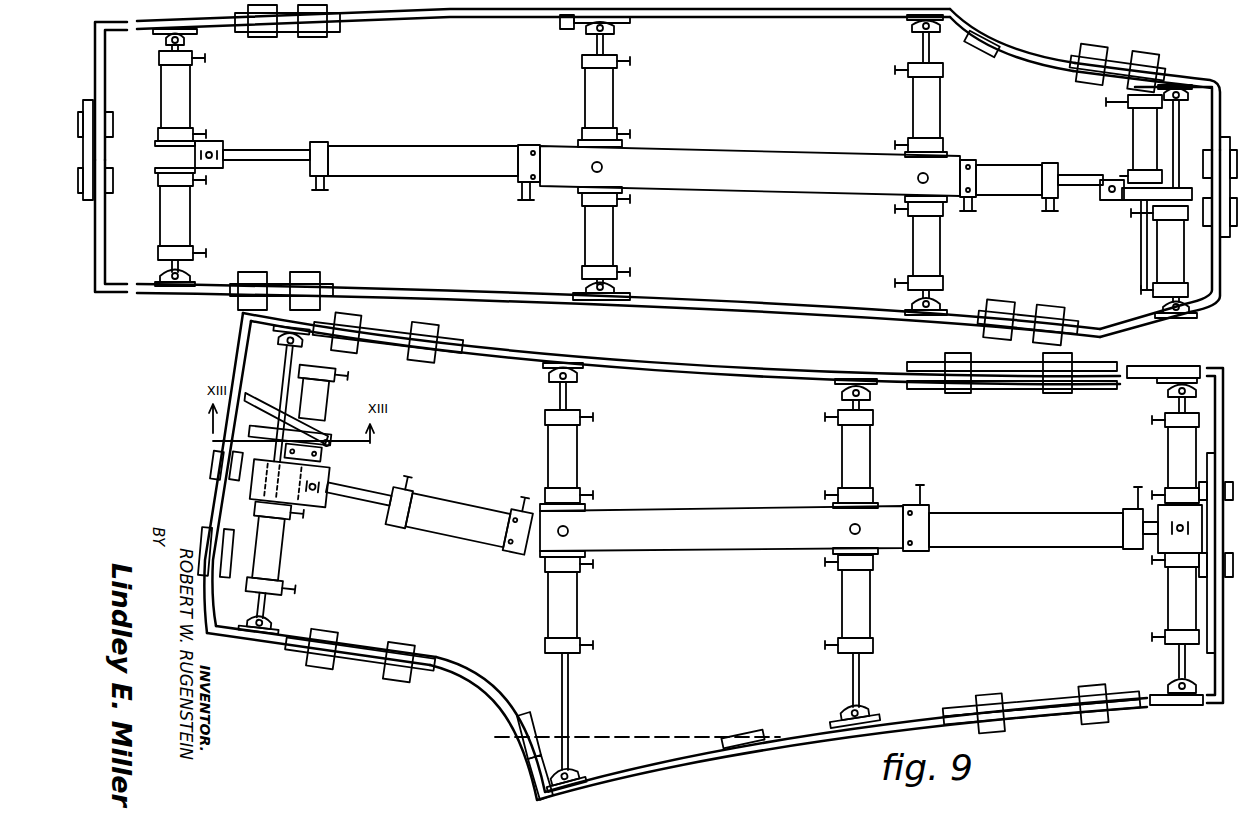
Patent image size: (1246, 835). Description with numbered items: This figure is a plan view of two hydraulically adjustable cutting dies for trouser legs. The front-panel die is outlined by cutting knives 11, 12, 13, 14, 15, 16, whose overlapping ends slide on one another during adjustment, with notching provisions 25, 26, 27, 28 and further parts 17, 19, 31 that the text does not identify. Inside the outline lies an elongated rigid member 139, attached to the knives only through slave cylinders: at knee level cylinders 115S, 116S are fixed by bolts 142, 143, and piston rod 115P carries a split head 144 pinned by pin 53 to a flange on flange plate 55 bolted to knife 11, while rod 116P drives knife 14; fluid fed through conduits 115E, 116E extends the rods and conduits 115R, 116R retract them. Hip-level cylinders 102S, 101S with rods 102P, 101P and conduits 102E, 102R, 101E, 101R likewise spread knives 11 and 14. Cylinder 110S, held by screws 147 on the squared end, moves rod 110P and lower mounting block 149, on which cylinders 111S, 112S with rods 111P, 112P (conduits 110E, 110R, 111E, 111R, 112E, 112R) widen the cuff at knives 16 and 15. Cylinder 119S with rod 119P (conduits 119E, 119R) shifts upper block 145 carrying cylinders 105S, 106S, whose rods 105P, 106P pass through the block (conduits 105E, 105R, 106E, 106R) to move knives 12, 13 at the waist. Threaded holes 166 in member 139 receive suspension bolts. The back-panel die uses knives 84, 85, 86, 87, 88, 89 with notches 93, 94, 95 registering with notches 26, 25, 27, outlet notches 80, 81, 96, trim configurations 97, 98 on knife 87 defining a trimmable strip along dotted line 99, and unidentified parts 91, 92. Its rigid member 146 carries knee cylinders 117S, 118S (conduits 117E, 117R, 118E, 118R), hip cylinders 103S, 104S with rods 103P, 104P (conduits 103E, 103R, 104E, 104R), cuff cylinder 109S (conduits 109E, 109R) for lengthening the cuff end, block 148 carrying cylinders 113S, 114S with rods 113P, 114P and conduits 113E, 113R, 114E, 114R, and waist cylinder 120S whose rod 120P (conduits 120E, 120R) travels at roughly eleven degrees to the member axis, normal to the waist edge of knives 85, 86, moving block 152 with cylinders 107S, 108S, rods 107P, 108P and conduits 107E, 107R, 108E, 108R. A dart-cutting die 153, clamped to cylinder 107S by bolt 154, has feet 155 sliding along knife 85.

The cutting knife 11 is at (955, 24).
The cutting knife 12 is at (1185, 78).
The cutting knife 13 is at (1194, 308).
The cutting knife 14 is at (758, 302).
The cutting knife 15 is at (98, 294).
The cutting knife 16 is at (97, 42).
The rail clamp plate 17 is at (320, 302).
The rail clamp blocks 19 is at (302, 270).
The notch 25 is at (560, 27).
The notch 26 is at (590, 304).
The notch 27 is at (910, 320).
The notch 28 is at (993, 46).
The pivot bracket plate 31 is at (628, 22).
The pin 53 is at (607, 35).
The flange plate 55 is at (616, 30).
The outlet notch 80 is at (210, 608).
The outlet notch 81 is at (1222, 690).
The cutting knife 84 is at (700, 368).
The cutting knife 85 is at (238, 346).
The cutting knife 86 is at (230, 638).
The cutting knife 87 is at (700, 760).
The cutting knife 88 is at (1160, 710).
The cutting knife 89 is at (1140, 368).
The clamp plate 91 is at (953, 390).
The clamp blocks 92 is at (947, 354).
The notch 93 is at (854, 376).
The notch 94 is at (856, 728).
The notch 95 is at (568, 358).
The outlet notch 96 is at (532, 774).
The notch-cutting configuration 97 is at (518, 740).
The notch-cutting configuration 98 is at (750, 748).
The dotted line 99 is at (665, 736).
The conduit 101E is at (900, 209).
The piston rod 101P is at (934, 303).
The conduit 101R is at (900, 284).
The slave hydraulic cylinder 101S is at (915, 250).
The conduit 102E is at (900, 146).
The piston rod 102P is at (930, 46).
The conduit 102R is at (906, 66).
The slave hydraulic cylinder 102S is at (918, 108).
The conduit 103E is at (590, 566).
The piston rod 103P is at (568, 710).
The conduit 103R is at (592, 652).
The slave hydraulic cylinder 103S is at (577, 616).
The conduit 104E is at (586, 494).
The piston rod 104P is at (556, 394).
The conduit 104R is at (592, 418).
The slave hydraulic cylinder 104S is at (578, 456).
The conduit 105E is at (1150, 290).
The piston rod 105P is at (1180, 130).
The conduit 105R is at (1150, 224).
The slave hydraulic cylinder 105S is at (1165, 250).
The conduit 106E is at (1106, 104).
The piston rod 106P is at (1141, 266).
The conduit 106R is at (1122, 172).
The slave hydraulic cylinder 106S is at (1133, 127).
The conduit 107E is at (345, 374).
The piston rod 107P is at (285, 613).
The conduit 107R is at (332, 470).
The slave hydraulic cylinder 107S is at (320, 400).
The conduit 108E is at (292, 584).
The piston rod 108P is at (300, 356).
The conduit 108R is at (302, 522).
The slave hydraulic cylinder 108S is at (268, 548).
The conduit 109E is at (930, 502).
The conduit 109R is at (1140, 496).
The slave hydraulic cylinder 109S is at (1030, 514).
The conduit 110E is at (522, 202).
The piston rod 110P is at (250, 160).
The conduit 110R is at (322, 190).
The slave hydraulic cylinder 110S is at (410, 175).
The conduit 111E is at (200, 132).
The piston rod 111P is at (165, 43).
The conduit 111R is at (205, 60).
The slave hydraulic cylinder 111S is at (186, 98).
The conduit 112E is at (198, 182).
The piston rod 112P is at (165, 262).
The conduit 112R is at (193, 250).
The slave hydraulic cylinder 112S is at (183, 218).
The conduit 113E is at (1152, 571).
The piston rod 113P is at (1178, 666).
The conduit 113R is at (1152, 640).
The slave hydraulic cylinder 113S is at (1170, 608).
The conduit 114E is at (1152, 494).
The piston rod 114P is at (1178, 406).
The conduit 114R is at (1152, 420).
The slave hydraulic cylinder 114S is at (1170, 455).
The conduit 115E is at (622, 137).
The piston rod 115P is at (595, 42).
The conduit 115R is at (622, 64).
The slave hydraulic cylinder 115S is at (610, 104).
The conduit 116E is at (630, 204).
The piston rod 116P is at (592, 282).
The conduit 116R is at (620, 272).
The slave hydraulic cylinder 116S is at (606, 245).
The conduit 117E is at (832, 582).
The conduit 117R is at (822, 652).
The slave hydraulic cylinder 117S is at (872, 610).
The conduit 118E is at (836, 496).
The conduit 118R is at (832, 418).
The slave hydraulic cylinder 118S is at (872, 446).
The conduit 119E is at (968, 212).
The piston rod 119P is at (1070, 186).
The conduit 119R is at (1046, 212).
The slave hydraulic cylinder 119S is at (1024, 166).
The conduit 120E is at (524, 498).
The piston rod 120P is at (378, 502).
The conduit 120R is at (420, 480).
The slave hydraulic cylinder 120S is at (470, 508).
The elongated member 139 is at (716, 156).
The bolts 142 is at (585, 138).
The bolts 143 is at (580, 206).
The split head 144 is at (557, 57).
The upper mounting block 145 is at (1120, 200).
The rigid member 146 is at (700, 514).
The bolts or screws 147 is at (528, 150).
The block 148 is at (1165, 546).
The lower mounting block 149 is at (220, 144).
The block 152 is at (332, 490).
The dart-cutting die 153 is at (305, 430).
The bolt 154 is at (340, 440).
The feet 155 is at (252, 396).
The bolt holes 166 is at (603, 164).